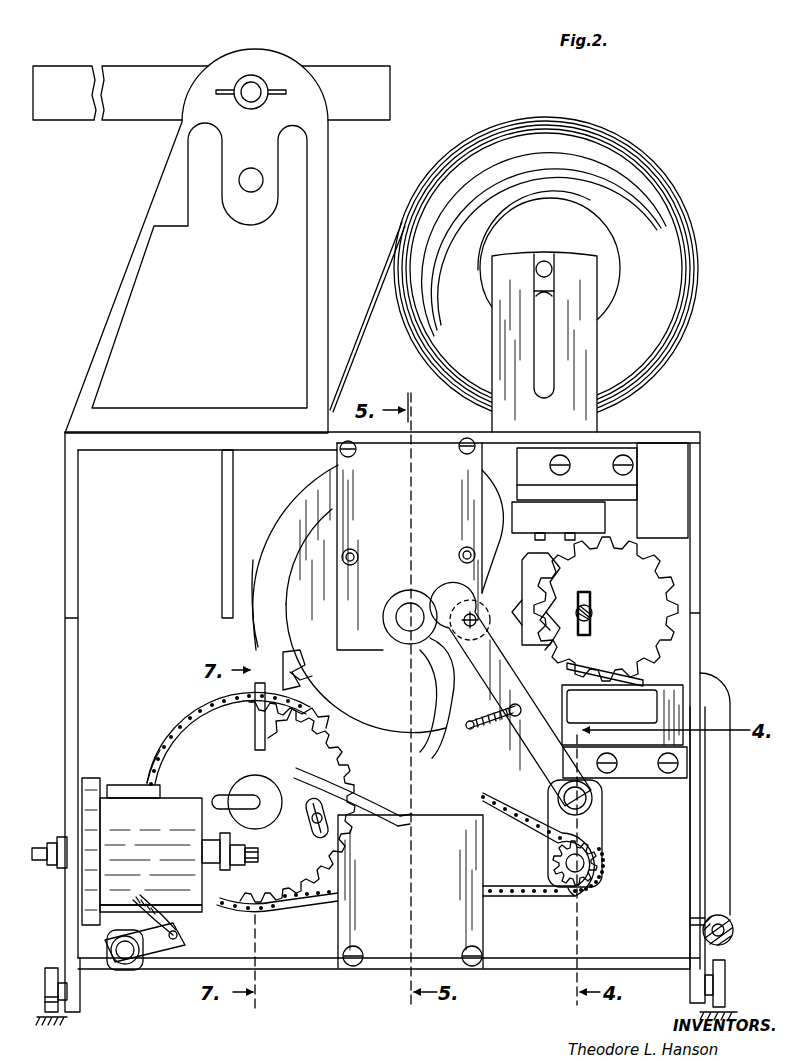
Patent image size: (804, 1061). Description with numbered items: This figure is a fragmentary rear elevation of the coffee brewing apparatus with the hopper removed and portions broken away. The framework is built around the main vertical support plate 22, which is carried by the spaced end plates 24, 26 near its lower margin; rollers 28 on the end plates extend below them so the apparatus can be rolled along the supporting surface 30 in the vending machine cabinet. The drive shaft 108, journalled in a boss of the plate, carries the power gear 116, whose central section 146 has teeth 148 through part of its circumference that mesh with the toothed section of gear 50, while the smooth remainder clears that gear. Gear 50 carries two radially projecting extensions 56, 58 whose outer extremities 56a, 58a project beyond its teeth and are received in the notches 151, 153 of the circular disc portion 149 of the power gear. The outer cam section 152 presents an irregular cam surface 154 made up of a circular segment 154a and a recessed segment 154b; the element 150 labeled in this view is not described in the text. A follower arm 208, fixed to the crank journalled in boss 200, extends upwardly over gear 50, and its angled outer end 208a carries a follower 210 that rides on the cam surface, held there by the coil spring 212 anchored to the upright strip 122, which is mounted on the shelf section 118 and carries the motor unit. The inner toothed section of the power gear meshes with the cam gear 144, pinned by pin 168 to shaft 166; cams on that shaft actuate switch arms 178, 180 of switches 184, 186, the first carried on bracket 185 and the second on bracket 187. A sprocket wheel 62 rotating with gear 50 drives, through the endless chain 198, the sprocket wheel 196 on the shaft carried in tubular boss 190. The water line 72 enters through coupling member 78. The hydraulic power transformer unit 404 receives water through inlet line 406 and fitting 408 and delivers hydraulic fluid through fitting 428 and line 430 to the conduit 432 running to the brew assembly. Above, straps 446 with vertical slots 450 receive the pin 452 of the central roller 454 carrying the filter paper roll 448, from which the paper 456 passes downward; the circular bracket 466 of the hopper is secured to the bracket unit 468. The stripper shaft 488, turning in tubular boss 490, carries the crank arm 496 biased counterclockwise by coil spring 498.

The main vertical support plate 22 is at (680, 490).
The end plate 24 is at (705, 950).
The end plate 26 is at (70, 951).
The rollers 28 is at (712, 985).
The supporting surface 30 is at (60, 1026).
The gear 50 is at (165, 733).
The extension 56 is at (262, 730).
The outer extremity of extension 56a is at (300, 678).
The extension 58 is at (298, 740).
The outer extremity of extension 58a is at (394, 808).
The sprocket wheel 62 is at (285, 895).
The water line 72 is at (218, 797).
The coupling member 78 is at (282, 820).
The drive shaft 108 is at (418, 600).
The power gear 116 is at (290, 510).
The shelf section 118 is at (157, 448).
The upright strip 122 is at (343, 466).
The cam gear 144 is at (660, 570).
The central section 146 is at (580, 597).
The teeth 148 is at (540, 580).
The circular disc portion 149 is at (253, 620).
The pawl tooth 150 is at (572, 651).
The notch 151 is at (304, 658).
The cam section 152 is at (390, 770).
The notch 153 is at (512, 608).
The cam surface 154 is at (320, 735).
The circular segment 154a is at (333, 523).
The recessed segment 154b is at (432, 668).
The shaft 166 is at (592, 615).
The pin 168 is at (590, 600).
The switch arm 178 is at (595, 665).
The switch arm 180 is at (597, 548).
The switch 184 is at (622, 715).
The bracket 185 is at (650, 778).
The switch 186 is at (655, 490).
The bracket 187 is at (662, 490).
The tubular boss 190 is at (597, 852).
The sprocket wheel 196 is at (582, 888).
The endless chain 198 is at (500, 897).
The boss 200 is at (595, 828).
The follower arm 208 is at (515, 690).
The outer end of follower arm 208a is at (450, 698).
The follower 210 is at (480, 622).
The coil spring 212 is at (494, 738).
The power transformer unit 404 is at (183, 907).
The water inlet line 406 is at (40, 848).
The fitting 408 is at (55, 866).
The fitting 428 is at (236, 870).
The hydraulic fluid line 430 is at (252, 858).
The conduit 432 is at (732, 922).
The upstanding straps 446 is at (597, 350).
The roll of filter paper 448 is at (656, 178).
The vertical slots 450 is at (548, 360).
The pin 452 is at (552, 270).
The central roller 454 is at (544, 255).
The paper 456 is at (345, 345).
The circular bracket 466 is at (318, 70).
The bracket unit 468 is at (112, 290).
The horizontal shaft 488 is at (140, 968).
The tubular boss 490 is at (120, 972).
The crank arm 496 is at (186, 944).
The coil spring 498 is at (142, 851).